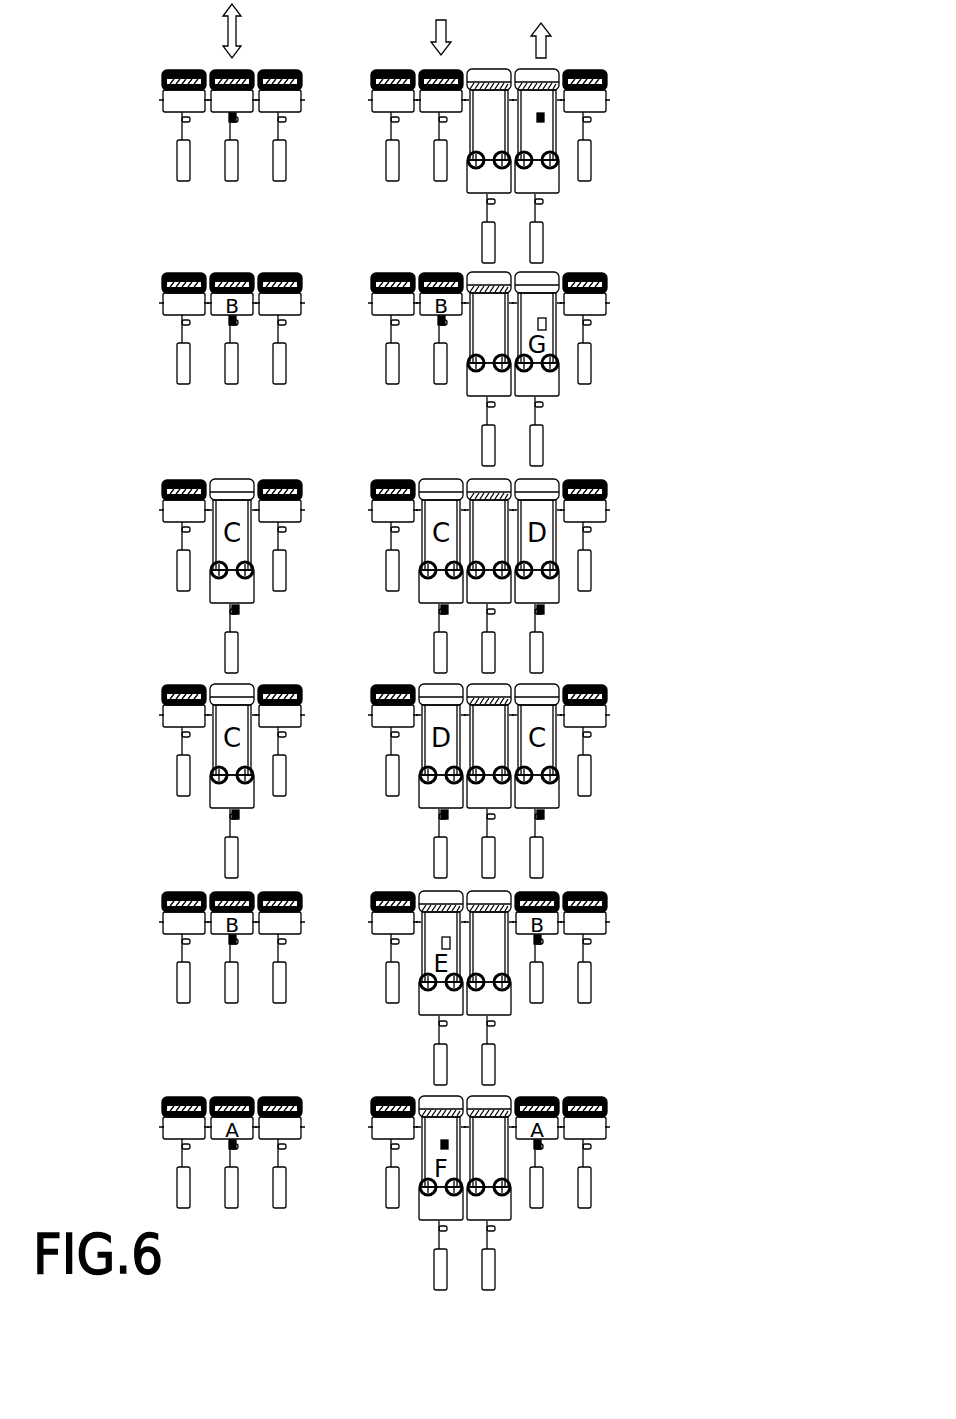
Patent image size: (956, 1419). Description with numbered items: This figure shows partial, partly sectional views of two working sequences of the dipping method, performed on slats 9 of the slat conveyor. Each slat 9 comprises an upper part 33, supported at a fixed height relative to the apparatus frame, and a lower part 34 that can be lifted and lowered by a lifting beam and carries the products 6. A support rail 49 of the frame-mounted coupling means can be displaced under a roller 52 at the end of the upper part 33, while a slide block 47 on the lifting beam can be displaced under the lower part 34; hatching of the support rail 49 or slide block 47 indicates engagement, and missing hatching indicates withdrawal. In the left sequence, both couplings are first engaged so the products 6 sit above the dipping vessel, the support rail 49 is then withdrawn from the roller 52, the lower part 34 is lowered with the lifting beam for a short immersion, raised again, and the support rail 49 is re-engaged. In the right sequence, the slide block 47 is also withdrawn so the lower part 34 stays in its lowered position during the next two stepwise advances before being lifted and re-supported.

The products 6 is at (183, 160).
The slat 9 is at (184, 54).
The upper part 33 is at (152, 80).
The lower part 34 is at (150, 100).
The slide block 47 is at (231, 122).
The support rail 49 is at (284, 96).
The roller 52 is at (263, 70).